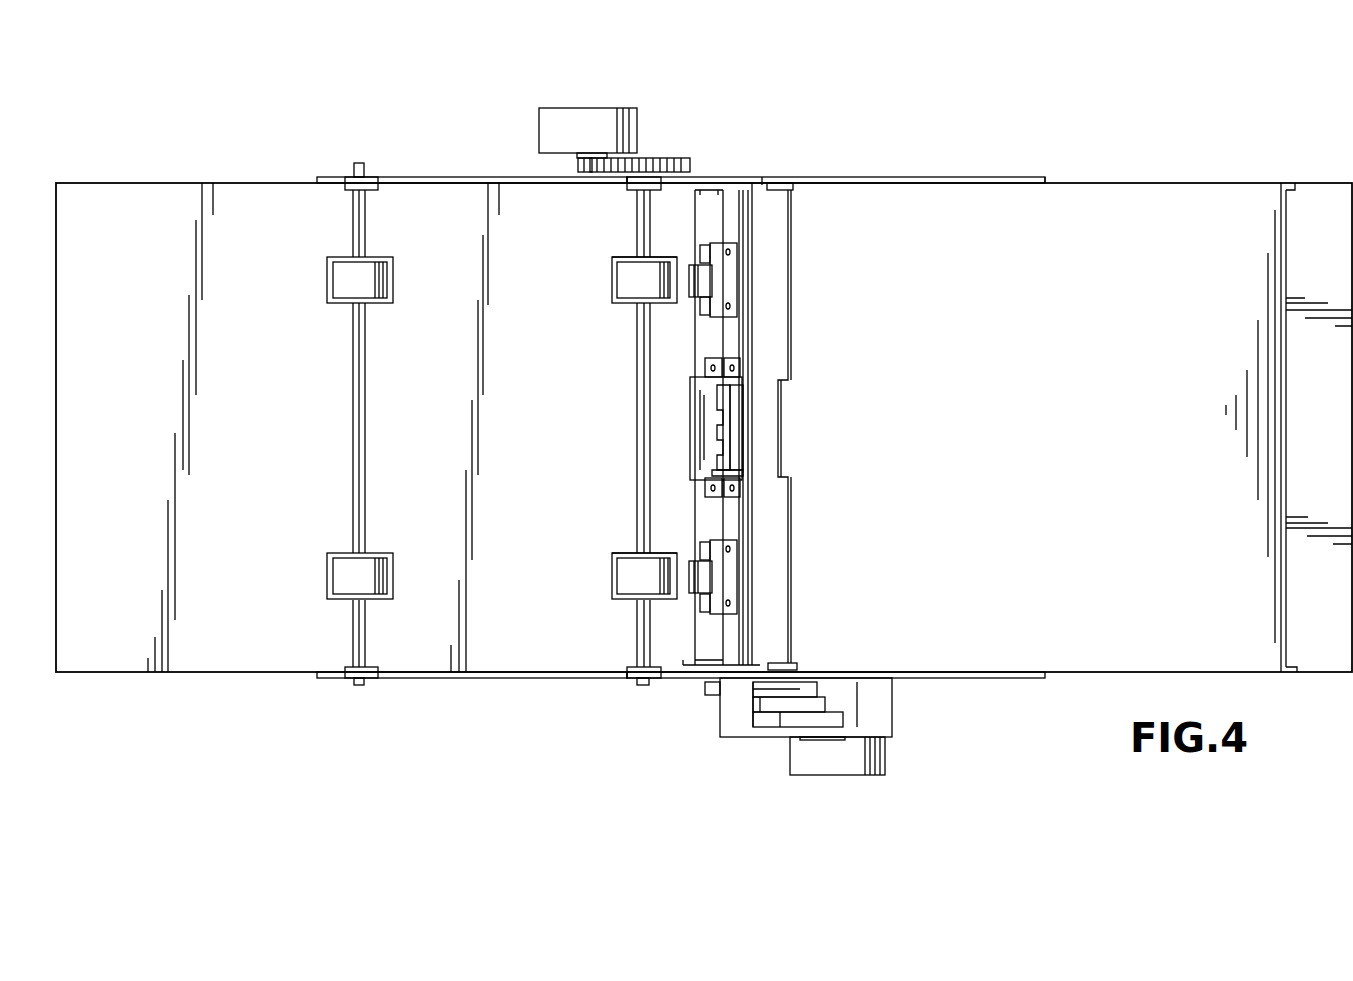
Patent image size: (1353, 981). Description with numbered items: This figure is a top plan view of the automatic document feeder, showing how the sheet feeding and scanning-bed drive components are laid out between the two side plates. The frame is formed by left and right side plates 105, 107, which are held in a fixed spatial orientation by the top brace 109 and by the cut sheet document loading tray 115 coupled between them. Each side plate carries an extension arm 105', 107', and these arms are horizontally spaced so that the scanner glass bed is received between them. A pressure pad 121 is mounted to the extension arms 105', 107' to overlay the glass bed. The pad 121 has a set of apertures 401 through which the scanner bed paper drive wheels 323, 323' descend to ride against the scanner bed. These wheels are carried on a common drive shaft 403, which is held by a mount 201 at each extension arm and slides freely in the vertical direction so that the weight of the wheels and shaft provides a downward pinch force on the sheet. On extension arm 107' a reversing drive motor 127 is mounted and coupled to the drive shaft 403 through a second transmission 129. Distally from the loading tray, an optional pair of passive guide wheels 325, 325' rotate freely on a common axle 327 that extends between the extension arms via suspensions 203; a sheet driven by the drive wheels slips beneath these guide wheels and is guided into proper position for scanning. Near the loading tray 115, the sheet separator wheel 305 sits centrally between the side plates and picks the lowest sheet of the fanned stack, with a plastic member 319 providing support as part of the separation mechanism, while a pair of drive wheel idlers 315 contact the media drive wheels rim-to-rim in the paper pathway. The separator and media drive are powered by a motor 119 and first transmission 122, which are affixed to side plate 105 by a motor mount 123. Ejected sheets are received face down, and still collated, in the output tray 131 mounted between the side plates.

The side plate 105 is at (838, 713).
The extension arm 105' is at (472, 715).
The side plate 107 is at (836, 146).
The extension arm 107' is at (472, 387).
The top brace 109 is at (782, 345).
The cut sheet document loading tray 115 is at (1180, 198).
The motor 119 is at (830, 780).
The pressure pad 121 is at (168, 203).
The first transmission 122 is at (845, 697).
The motor mount 123 is at (733, 745).
The drive motor 127 is at (568, 108).
The second transmission 129 is at (658, 157).
The output tray 131 is at (1322, 194).
The mount 201 is at (627, 193).
The suspension 203 is at (372, 182).
The sheet separator wheel 305 is at (744, 428).
The drive wheel idler 315 is at (703, 283).
The plastic member 319 is at (697, 422).
The scanner bed paper drive wheel 323 is at (595, 576).
The scanner bed paper drive wheel 323' is at (595, 280).
The passive guide wheel 325 is at (312, 576).
The passive guide wheel 325' is at (310, 280).
The common axle 327 is at (354, 385).
The aperture 401 is at (622, 304).
The drive shaft 403 is at (637, 370).